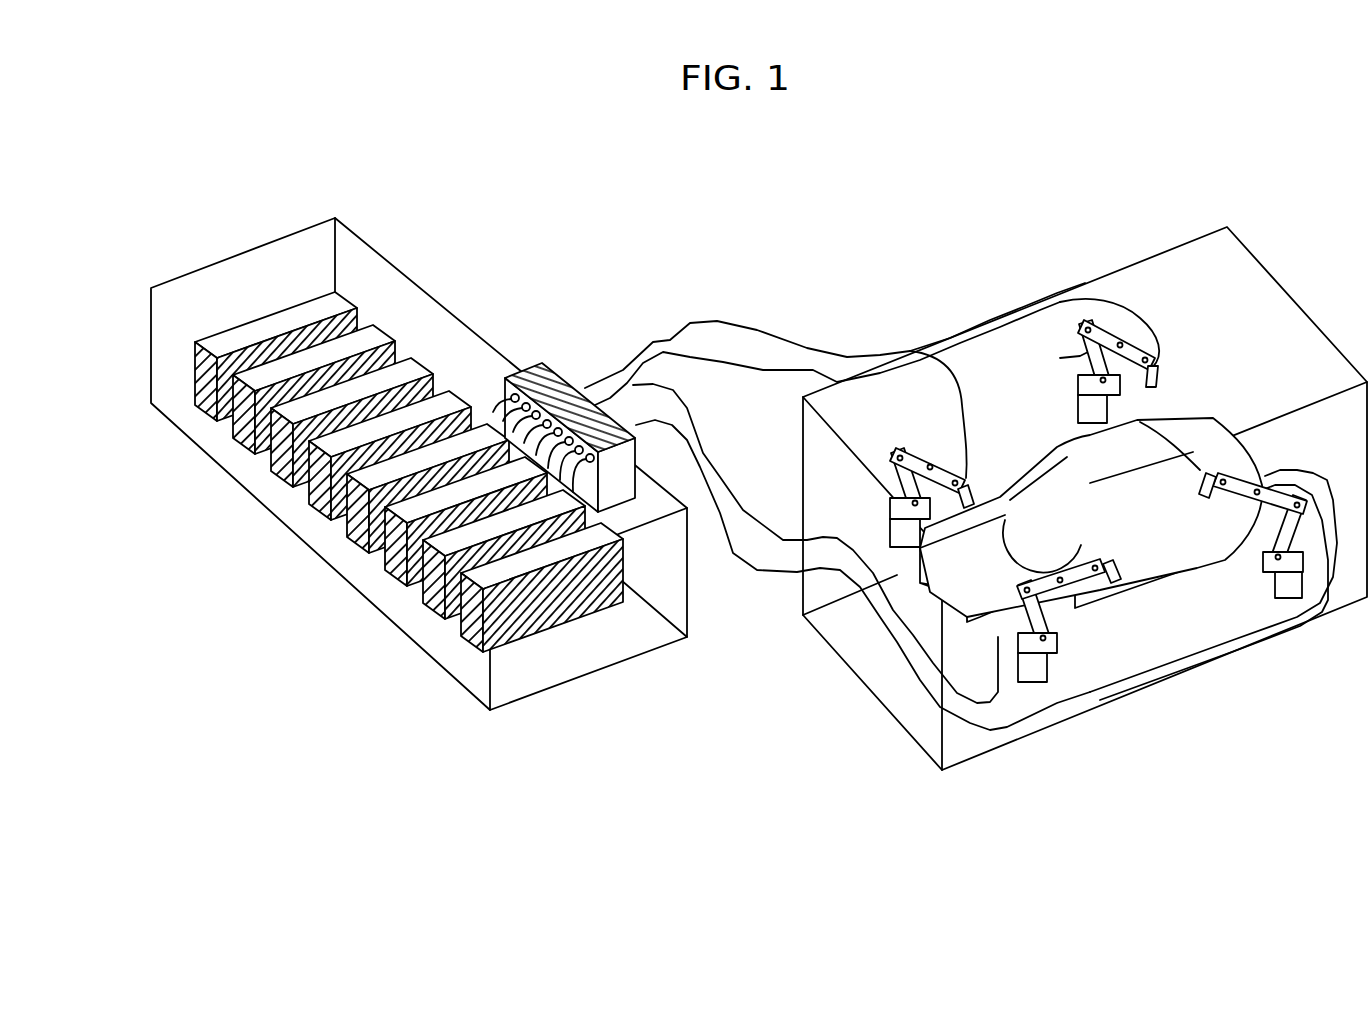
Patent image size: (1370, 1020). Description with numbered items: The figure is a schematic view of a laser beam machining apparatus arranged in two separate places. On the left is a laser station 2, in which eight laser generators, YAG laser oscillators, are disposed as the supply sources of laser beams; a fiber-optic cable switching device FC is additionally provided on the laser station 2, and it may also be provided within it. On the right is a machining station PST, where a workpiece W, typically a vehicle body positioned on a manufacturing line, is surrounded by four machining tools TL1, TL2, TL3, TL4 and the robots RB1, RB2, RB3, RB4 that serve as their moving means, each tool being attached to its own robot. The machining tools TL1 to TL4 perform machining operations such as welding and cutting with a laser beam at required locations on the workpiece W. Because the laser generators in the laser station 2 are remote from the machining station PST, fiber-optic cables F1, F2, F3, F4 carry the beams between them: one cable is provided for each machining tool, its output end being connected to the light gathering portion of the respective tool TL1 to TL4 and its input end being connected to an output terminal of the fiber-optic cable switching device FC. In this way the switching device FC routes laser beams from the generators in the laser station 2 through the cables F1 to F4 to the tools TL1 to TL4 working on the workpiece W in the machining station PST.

The laser station 2 is at (475, 722).
The fiber-optic cable switching device FC is at (590, 378).
The fiber-optic cable F1 is at (762, 372).
The fiber-optic cable F2 is at (1147, 308).
The fiber-optic cable F3 is at (1177, 677).
The fiber-optic cable F4 is at (895, 612).
The machining station PST is at (1142, 713).
The workpiece W is at (1182, 586).
The robot RB1 is at (904, 450).
The robot RB2 is at (1078, 345).
The robot RB3 is at (1282, 565).
The robot RB4 is at (1052, 625).
The machining tool TL1 is at (977, 481).
The machining tool TL2 is at (1165, 362).
The machining tool TL3 is at (1206, 470).
The machining tool TL4 is at (1127, 587).